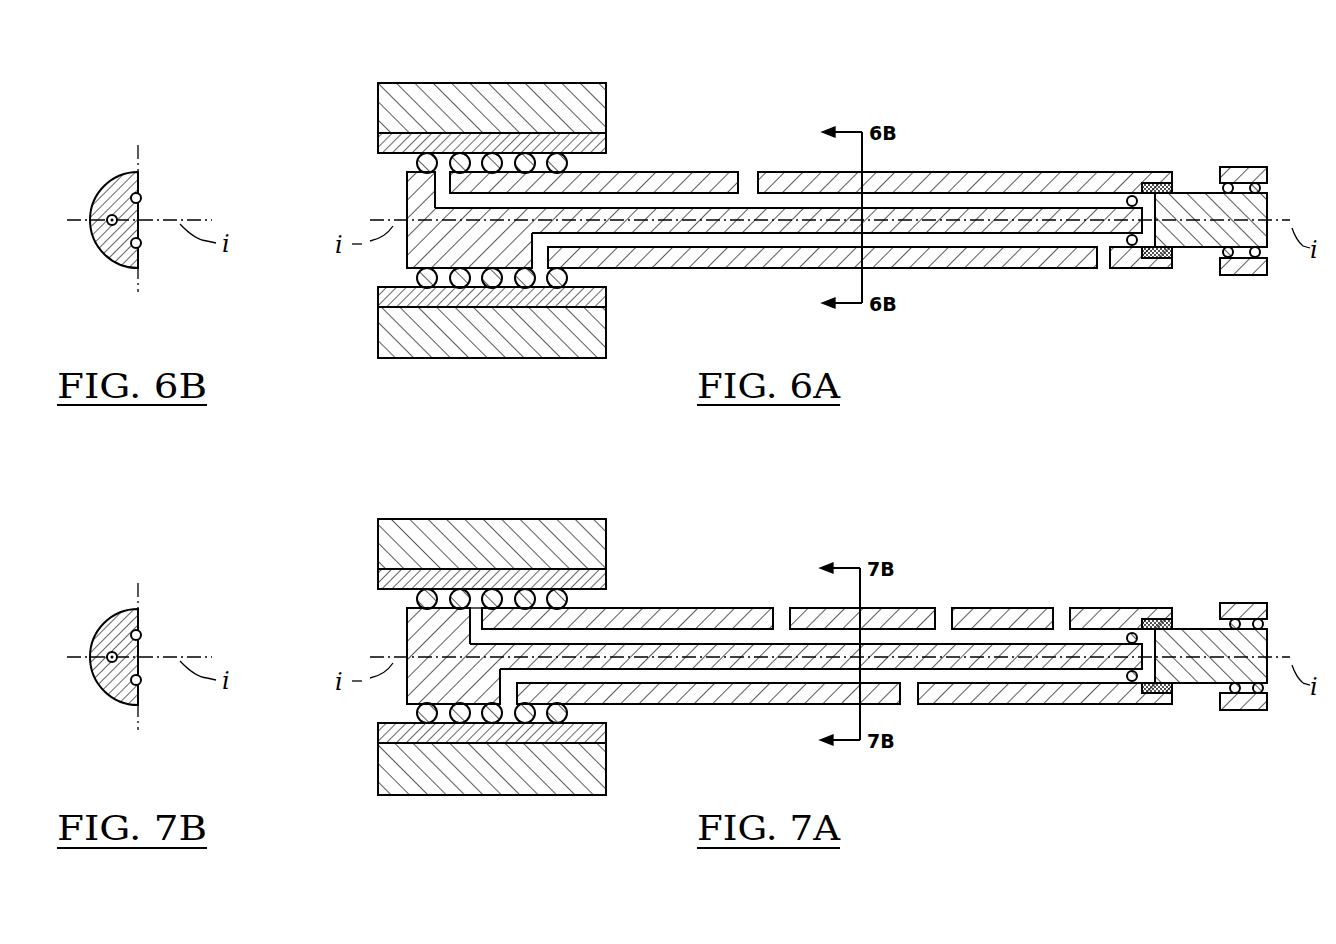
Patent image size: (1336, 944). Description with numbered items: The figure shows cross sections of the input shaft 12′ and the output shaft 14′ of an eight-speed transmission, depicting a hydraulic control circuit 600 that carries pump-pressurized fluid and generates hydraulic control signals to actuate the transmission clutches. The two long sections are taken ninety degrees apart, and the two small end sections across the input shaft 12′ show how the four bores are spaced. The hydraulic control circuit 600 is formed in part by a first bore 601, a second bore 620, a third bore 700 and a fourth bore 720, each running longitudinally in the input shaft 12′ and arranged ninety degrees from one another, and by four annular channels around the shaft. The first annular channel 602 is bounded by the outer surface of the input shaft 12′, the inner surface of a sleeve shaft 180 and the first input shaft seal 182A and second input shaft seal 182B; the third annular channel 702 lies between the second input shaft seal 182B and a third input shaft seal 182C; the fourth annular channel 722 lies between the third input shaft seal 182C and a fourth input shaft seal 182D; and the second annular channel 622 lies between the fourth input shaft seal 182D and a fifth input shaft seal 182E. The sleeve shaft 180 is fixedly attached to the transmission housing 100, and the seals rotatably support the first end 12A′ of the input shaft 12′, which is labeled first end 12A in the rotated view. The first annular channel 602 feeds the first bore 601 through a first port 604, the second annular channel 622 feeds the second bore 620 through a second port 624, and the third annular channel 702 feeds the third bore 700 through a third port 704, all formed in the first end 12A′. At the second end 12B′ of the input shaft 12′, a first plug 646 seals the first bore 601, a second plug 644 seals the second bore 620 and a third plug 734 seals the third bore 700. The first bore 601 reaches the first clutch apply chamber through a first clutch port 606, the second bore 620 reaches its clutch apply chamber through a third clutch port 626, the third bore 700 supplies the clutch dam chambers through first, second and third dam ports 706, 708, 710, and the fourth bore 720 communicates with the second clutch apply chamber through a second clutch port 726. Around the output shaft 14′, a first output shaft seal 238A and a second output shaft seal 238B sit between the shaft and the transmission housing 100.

In FIG. 6A, the transmission housing 100 is at (378, 95).
In FIG. 7A, the transmission housing 100 is at (585, 519).
In FIG. 6A, the sleeve shaft 180 is at (378, 297).
In FIG. 7A, the sleeve shaft 180 is at (378, 582).
In FIG. 6A, the first annular channel 602 is at (378, 143).
In FIG. 6A, the first port 604 is at (437, 200).
In FIG. 6A, the first clutch port 606 is at (742, 190).
In FIG. 6A, the hydraulic control circuit 600 is at (898, 78).
In FIG. 7A, the hydraulic control circuit 600 is at (1018, 538).
In FIG. 6B, the first bore 601 is at (141, 196).
In FIG. 7B, the first bore 601 is at (95, 670).
In FIG. 6A, the second bore 620 is at (746, 243).
In FIG. 6B, the second bore 620 is at (142, 247).
In FIG. 6A, the second annular channel 622 is at (545, 276).
In FIG. 6A, the second port 624 is at (607, 310).
In FIG. 6A, the third clutch port 626 is at (1118, 268).
In FIG. 6A, the second plug 644 is at (1143, 258).
In FIG. 6A, the first plug 646 is at (1128, 198).
In FIG. 6A, the first input shaft seal 182A is at (417, 165).
In FIG. 6A, the second input shaft seal 182B is at (457, 153).
In FIG. 6A, the third input shaft seal 182C is at (492, 153).
In FIG. 6A, the fourth input shaft seal 182D is at (527, 153).
In FIG. 6A, the fifth input shaft seal 182E is at (567, 163).
In FIG. 6A, the input shaft 12′ is at (958, 172).
In FIG. 7A, the input shaft 12′ is at (652, 608).
In FIG. 6A, the first end of the input shaft 12A′ is at (405, 265).
In FIG. 7A, the first end of the input shaft 12A is at (407, 640).
In FIG. 6A, the second end of the input shaft 12B′ is at (1005, 268).
In FIG. 7A, the second end of the input shaft 12B′ is at (1172, 697).
In FIG. 6A, the output shaft 14′ is at (1267, 200).
In FIG. 7A, the output shaft 14′ is at (1267, 643).
In FIG. 6A, the first output shaft seal 238A is at (1226, 182).
In FIG. 6A, the second output shaft seal 238B is at (1257, 182).
In FIG. 7A, the third bore 700 is at (713, 633).
In FIG. 7B, the third bore 700 is at (141, 633).
In FIG. 7A, the third annular channel 702 is at (503, 613).
In FIG. 7A, the third port 704 is at (480, 605).
In FIG. 7A, the first dam port 706 is at (782, 615).
In FIG. 7A, the second dam port 708 is at (942, 615).
In FIG. 7A, the third dam port 710 is at (1062, 617).
In FIG. 6B, the fourth bore 720 is at (94, 236).
In FIG. 7A, the fourth bore 720 is at (746, 679).
In FIG. 7B, the fourth bore 720 is at (142, 684).
In FIG. 7A, the fourth annular channel 722 is at (517, 705).
In FIG. 7A, the second clutch port 726 is at (903, 692).
In FIG. 7A, the third plug 734 is at (1137, 626).